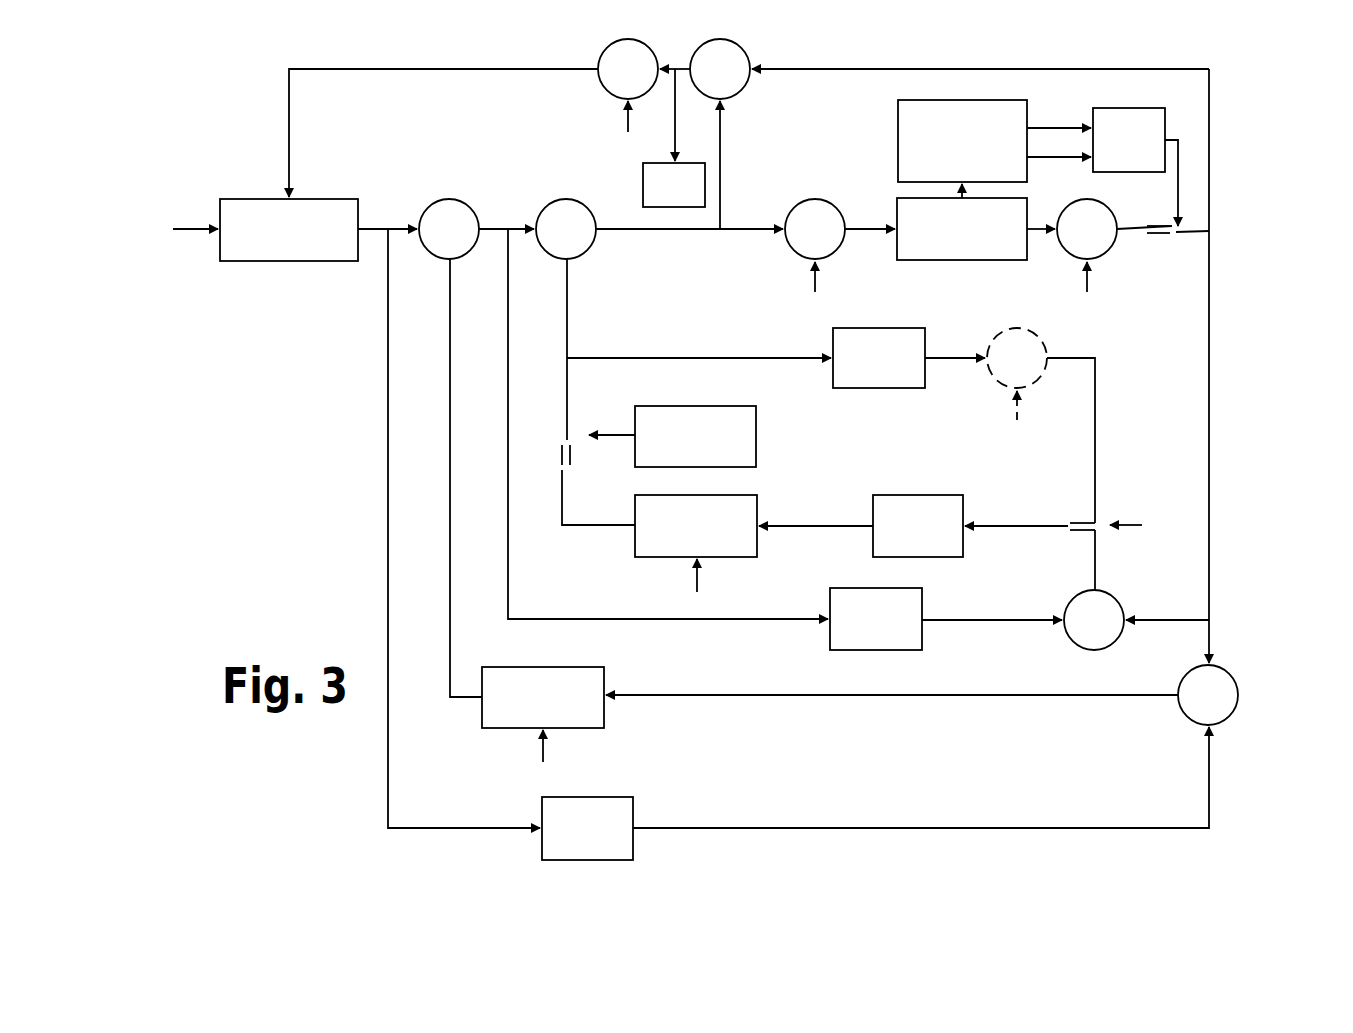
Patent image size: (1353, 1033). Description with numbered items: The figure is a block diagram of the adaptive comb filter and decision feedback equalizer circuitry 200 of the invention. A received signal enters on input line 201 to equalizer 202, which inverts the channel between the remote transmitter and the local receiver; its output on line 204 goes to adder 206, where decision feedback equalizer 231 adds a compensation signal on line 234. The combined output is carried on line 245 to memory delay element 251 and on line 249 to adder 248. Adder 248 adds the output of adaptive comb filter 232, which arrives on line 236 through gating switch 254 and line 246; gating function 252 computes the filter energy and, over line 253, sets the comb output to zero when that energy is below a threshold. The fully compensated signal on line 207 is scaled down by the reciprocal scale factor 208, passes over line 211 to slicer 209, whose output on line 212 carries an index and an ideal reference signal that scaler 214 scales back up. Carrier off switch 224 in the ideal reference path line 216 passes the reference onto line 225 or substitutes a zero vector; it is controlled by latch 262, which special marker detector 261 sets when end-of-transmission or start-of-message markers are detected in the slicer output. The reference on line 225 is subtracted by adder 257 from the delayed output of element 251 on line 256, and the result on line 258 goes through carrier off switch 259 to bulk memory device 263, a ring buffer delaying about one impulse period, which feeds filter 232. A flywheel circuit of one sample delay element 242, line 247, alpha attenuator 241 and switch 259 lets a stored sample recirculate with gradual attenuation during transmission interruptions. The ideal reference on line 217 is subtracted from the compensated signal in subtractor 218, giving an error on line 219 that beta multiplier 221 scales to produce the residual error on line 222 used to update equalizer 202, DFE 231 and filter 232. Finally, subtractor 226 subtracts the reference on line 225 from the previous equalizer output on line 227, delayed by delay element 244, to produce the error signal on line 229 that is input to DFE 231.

The receiver system 200 is at (258, 42).
The input signal line 201 is at (198, 229).
The equalizer 202 is at (289, 230).
The line 204 is at (371, 229).
The adder 206 is at (443, 200).
The line 249 is at (498, 229).
The adder 248 is at (584, 256).
The line 207 is at (690, 229).
The 1/scale factor 208 is at (818, 205).
The scaled signal line 211 is at (876, 229).
The slicer 209 is at (962, 222).
The line 212 is at (1040, 229).
The scaler 214 is at (1102, 256).
The ideal reference signal path line 216 is at (1180, 228).
The carrier off switch 224 is at (1180, 233).
The line 217 is at (858, 69).
The subtractor 218 is at (744, 92).
The line 219 is at (675, 60).
The beta multiplier 221 is at (606, 88).
The line 222 is at (522, 69).
The special marker detector 261 is at (960, 100).
The latch 262 is at (1125, 108).
The line 246 is at (567, 335).
The one sample delay element 242 is at (879, 358).
The delayed signal line 247 is at (955, 358).
The alpha attenuator 241 is at (1030, 385).
The line 225 is at (1209, 415).
The line 253 is at (612, 435).
The gating function 252 is at (695, 436).
The gating switch 254 is at (564, 445).
The line 236 is at (585, 525).
The adaptive comb filter 232 is at (696, 556).
The bulk memory device 263 is at (861, 526).
The carrier off switch 259 is at (1065, 530).
The line 258 is at (1095, 560).
The adder 257 is at (1094, 650).
The line 256 is at (993, 620).
The memory delay element 251 is at (876, 619).
The line 245 is at (575, 619).
The line 234 is at (450, 622).
The decision feedback equalizer 231 is at (543, 726).
The line 229 is at (890, 695).
The subtractor 226 is at (1190, 722).
The line 227 is at (388, 330).
The delay element 244 is at (587, 828).